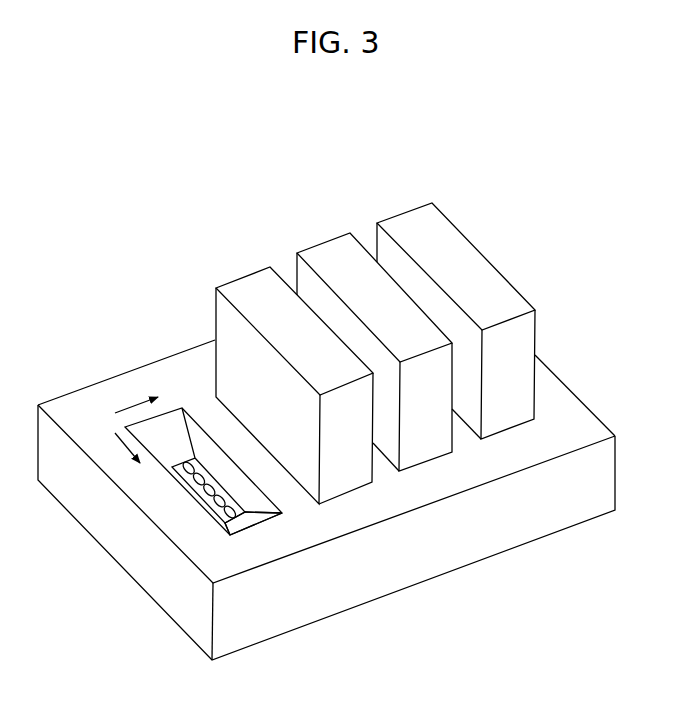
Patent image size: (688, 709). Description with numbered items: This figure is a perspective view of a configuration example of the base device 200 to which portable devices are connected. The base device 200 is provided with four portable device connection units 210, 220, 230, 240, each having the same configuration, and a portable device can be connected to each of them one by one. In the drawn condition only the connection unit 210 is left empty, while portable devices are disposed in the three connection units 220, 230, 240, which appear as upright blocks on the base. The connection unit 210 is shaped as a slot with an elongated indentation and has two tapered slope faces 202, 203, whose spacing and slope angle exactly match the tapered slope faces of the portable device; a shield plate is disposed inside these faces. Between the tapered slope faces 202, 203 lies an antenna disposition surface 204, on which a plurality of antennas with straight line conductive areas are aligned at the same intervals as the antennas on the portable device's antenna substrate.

The base device 200 is at (505, 208).
The portable device connection unit 210 is at (283, 512).
The tapered slope face 202 is at (172, 421).
The tapered slope face 203 is at (242, 523).
The antenna disposition surface 204 is at (182, 491).
The portable device connection unit 220 is at (333, 490).
The portable device connection unit 230 is at (420, 455).
The portable device connection unit 240 is at (502, 423).